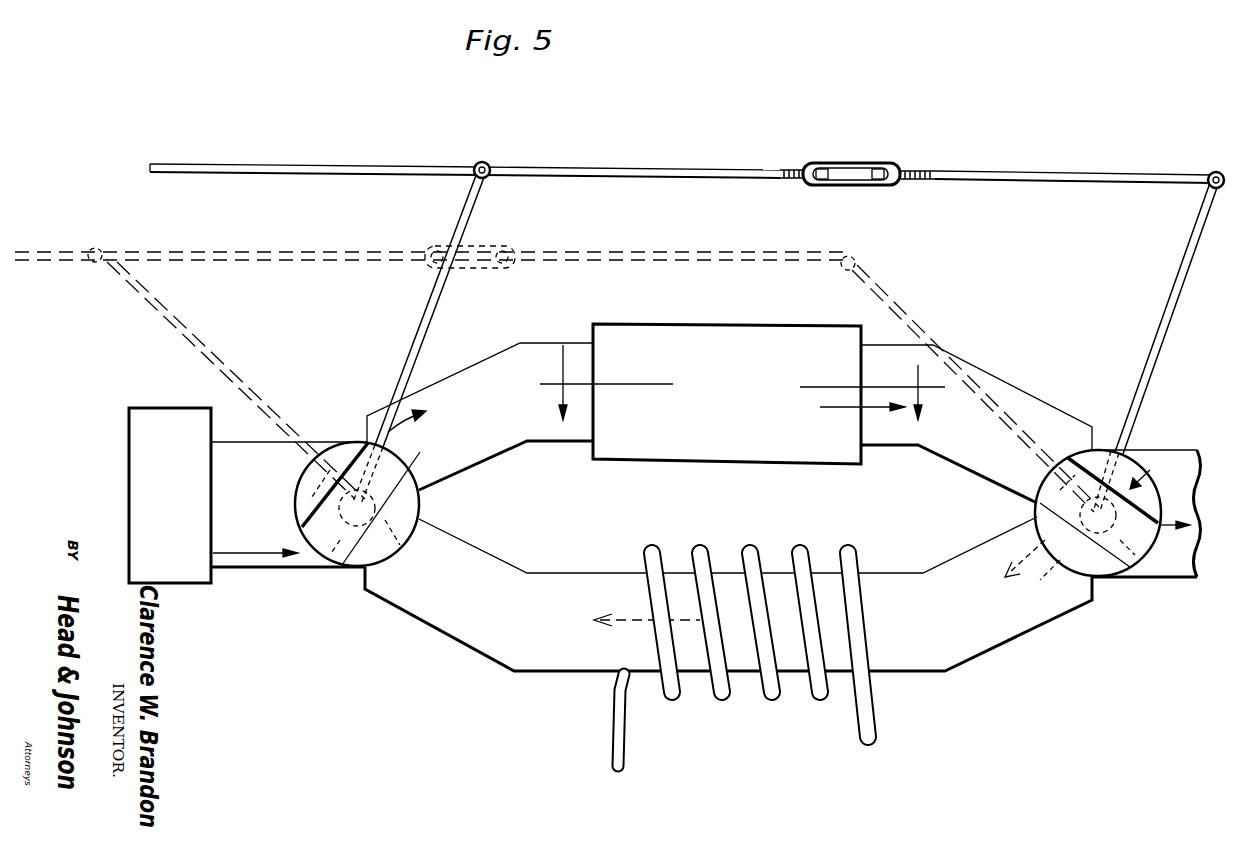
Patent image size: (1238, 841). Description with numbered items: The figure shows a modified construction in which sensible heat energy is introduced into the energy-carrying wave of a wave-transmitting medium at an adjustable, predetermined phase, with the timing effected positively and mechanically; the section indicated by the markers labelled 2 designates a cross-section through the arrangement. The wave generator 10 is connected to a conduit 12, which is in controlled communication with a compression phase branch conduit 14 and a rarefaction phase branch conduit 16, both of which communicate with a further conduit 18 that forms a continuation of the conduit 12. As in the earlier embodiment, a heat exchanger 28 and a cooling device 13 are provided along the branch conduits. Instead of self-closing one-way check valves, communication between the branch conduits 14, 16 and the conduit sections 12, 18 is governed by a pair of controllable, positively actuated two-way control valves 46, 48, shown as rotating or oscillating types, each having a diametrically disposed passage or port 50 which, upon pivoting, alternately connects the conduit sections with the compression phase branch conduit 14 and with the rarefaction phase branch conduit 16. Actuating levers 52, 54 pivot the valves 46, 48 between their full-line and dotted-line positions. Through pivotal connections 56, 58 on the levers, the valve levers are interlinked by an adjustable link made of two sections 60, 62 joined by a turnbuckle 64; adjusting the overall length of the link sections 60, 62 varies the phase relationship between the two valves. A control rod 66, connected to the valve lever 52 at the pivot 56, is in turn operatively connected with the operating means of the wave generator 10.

The section line 2- 2 is at (742, 382).
The wave generator 10 is at (150, 414).
The conduit 12 is at (225, 455).
The cooling device 13 is at (749, 552).
The compression phase branch conduit 14 is at (480, 372).
The rarefaction phase branch conduit 16 is at (548, 671).
The further conduit 18 is at (1156, 456).
The heat exchanger 28 is at (665, 455).
The two-way control valve 46 is at (412, 511).
The two-way control valve 48 is at (1040, 517).
The diametrically disposed passage or port 50 is at (1048, 495).
The actuating lever 52 is at (418, 330).
The actuating lever 54 is at (1168, 304).
The pivotal connection 56 is at (480, 162).
The pivotal connection 58 is at (1210, 173).
The link section 60 is at (710, 170).
The link section 62 is at (1048, 175).
The turnbuckle 64 is at (848, 163).
The control rod 66 is at (335, 164).